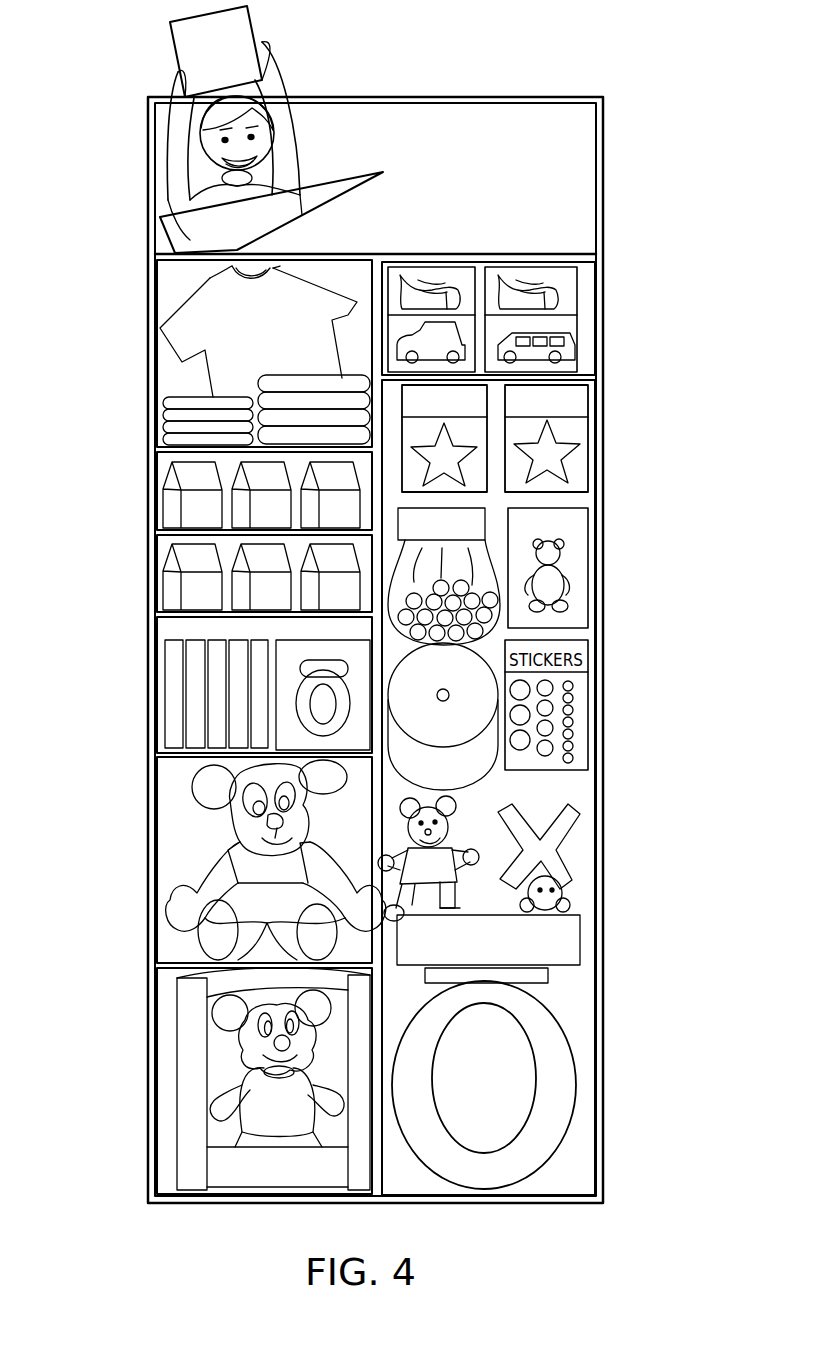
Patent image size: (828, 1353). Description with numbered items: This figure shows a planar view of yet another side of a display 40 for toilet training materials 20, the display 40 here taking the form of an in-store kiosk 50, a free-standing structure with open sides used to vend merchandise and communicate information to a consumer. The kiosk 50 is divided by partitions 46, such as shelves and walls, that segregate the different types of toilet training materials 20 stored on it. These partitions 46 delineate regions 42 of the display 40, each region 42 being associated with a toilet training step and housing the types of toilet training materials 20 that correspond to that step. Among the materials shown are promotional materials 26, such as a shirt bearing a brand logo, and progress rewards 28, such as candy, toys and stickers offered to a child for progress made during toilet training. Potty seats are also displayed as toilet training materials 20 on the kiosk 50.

The toilet training materials 20 is at (472, 1045).
The promotional materials 26 is at (168, 340).
The progress rewards 28 is at (253, 858).
The display 40 is at (630, 350).
The region 42 is at (135, 1094).
The partition 46 is at (335, 525).
The kiosk 50 is at (150, 541).